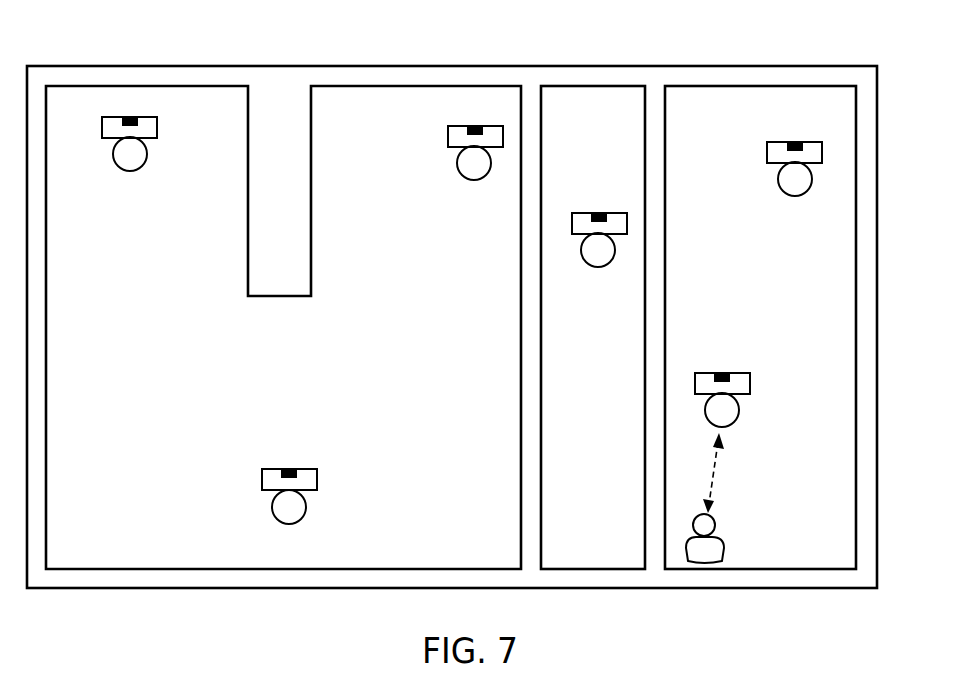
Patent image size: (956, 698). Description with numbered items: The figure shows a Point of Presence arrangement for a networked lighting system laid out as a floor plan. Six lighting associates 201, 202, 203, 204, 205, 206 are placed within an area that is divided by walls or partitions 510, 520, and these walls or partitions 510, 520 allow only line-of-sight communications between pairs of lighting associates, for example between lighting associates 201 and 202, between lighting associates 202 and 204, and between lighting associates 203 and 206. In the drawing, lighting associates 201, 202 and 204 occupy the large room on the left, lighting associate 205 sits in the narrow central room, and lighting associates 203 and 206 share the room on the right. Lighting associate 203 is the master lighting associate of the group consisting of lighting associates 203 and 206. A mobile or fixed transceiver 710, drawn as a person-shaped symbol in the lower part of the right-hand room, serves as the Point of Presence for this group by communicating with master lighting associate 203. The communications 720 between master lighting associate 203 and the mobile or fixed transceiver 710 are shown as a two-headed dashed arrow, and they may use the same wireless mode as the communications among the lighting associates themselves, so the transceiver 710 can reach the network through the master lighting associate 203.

The walls or partitions 510 is at (118, 65).
The walls or partitions 520 is at (248, 135).
The lighting associate 201 is at (102, 125).
The lighting associate 202 is at (320, 478).
The lighting associate 203 is at (752, 382).
The lighting associate 204 is at (446, 133).
The lighting associate 205 is at (586, 212).
The lighting associate 206 is at (767, 152).
The mobile or fixed transceiver 710 is at (727, 542).
The communications 720 is at (714, 472).